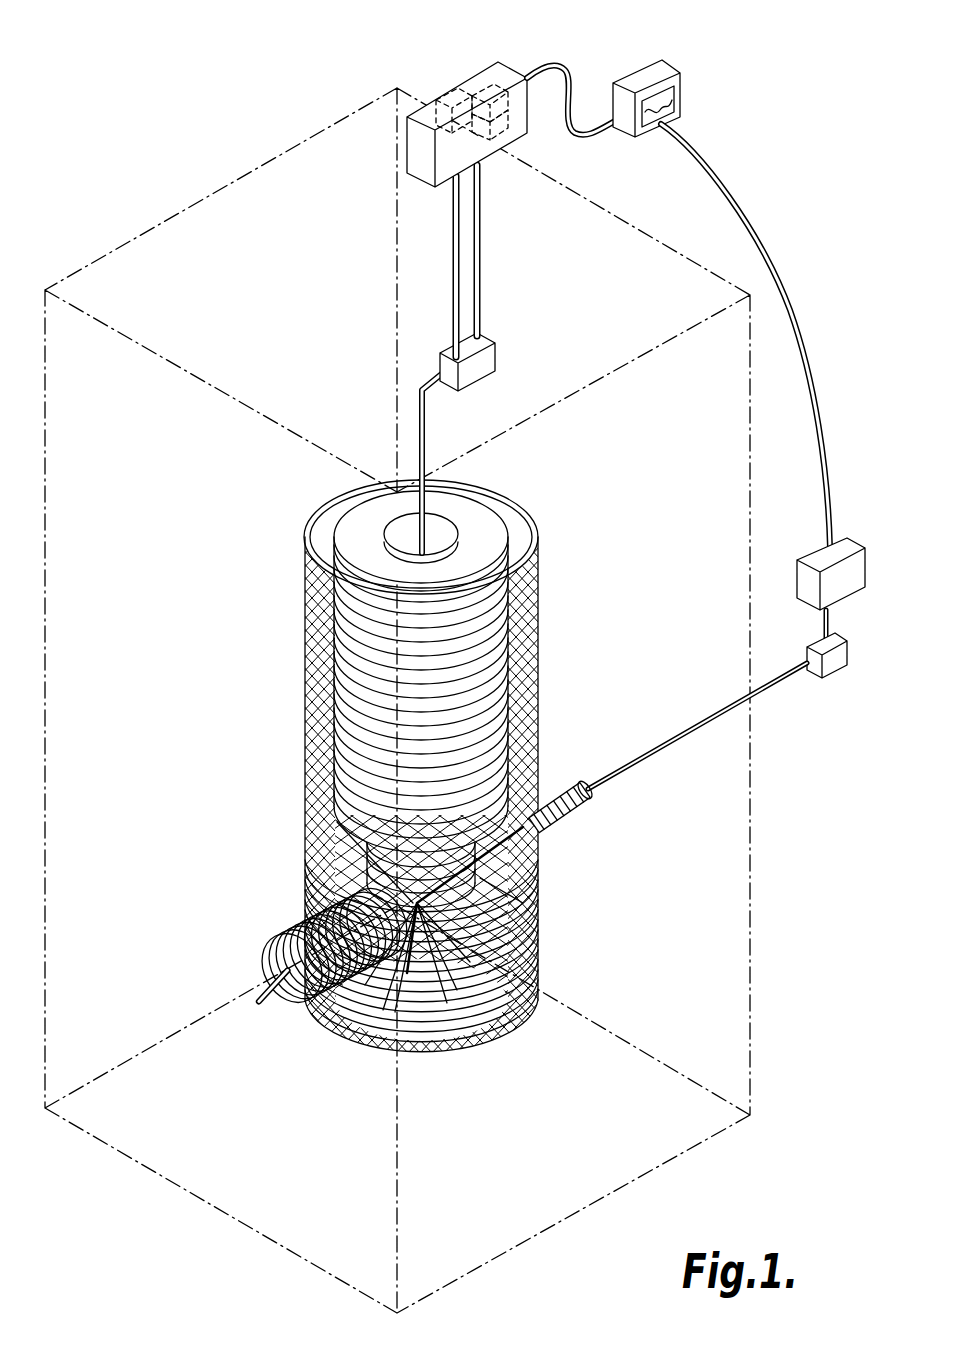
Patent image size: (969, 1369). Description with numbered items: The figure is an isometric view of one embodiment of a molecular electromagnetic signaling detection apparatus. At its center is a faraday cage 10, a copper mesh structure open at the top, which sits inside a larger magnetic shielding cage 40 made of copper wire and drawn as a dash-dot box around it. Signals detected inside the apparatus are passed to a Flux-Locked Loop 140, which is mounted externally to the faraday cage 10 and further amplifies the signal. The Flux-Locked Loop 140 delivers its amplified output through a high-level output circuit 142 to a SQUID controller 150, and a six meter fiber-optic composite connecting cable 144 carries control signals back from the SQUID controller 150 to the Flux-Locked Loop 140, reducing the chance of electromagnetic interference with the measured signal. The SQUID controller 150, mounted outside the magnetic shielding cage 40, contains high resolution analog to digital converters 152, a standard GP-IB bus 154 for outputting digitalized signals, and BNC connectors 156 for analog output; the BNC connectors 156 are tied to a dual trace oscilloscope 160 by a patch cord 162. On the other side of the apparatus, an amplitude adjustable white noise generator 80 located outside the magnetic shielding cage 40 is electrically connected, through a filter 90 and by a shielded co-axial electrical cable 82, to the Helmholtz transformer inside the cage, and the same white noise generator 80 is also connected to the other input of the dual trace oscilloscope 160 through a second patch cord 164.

The faraday cage 10 is at (262, 760).
The magnetic shielding cage 40 is at (167, 221).
The amplitude adjustable white noise generator 80 is at (846, 538).
The electrical cable 82 is at (718, 715).
The filter 90 is at (828, 666).
The Flux-Locked Loop 140 is at (505, 355).
The high-level output circuit 142 is at (460, 253).
The fiber-optic composite connecting cable 144 is at (481, 237).
The SQUID controller 150 is at (435, 119).
The high resolution analog to digital converters 152 is at (436, 104).
The GP-IB bus 154 is at (492, 142).
The BNC connectors 156 is at (503, 72).
The dual trace oscilloscope 160 is at (632, 124).
The patch cord 162 is at (568, 92).
The patch cord 164 is at (749, 226).